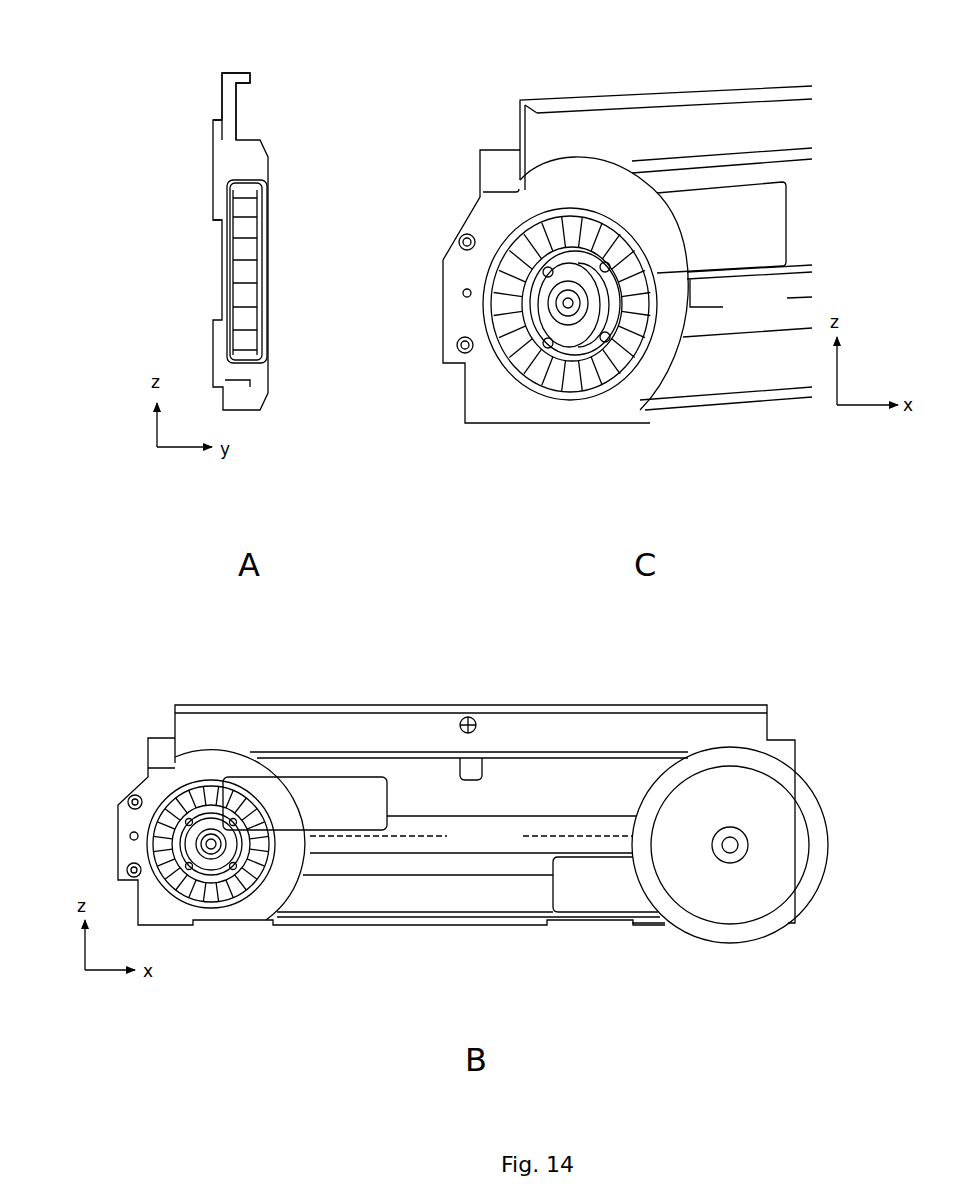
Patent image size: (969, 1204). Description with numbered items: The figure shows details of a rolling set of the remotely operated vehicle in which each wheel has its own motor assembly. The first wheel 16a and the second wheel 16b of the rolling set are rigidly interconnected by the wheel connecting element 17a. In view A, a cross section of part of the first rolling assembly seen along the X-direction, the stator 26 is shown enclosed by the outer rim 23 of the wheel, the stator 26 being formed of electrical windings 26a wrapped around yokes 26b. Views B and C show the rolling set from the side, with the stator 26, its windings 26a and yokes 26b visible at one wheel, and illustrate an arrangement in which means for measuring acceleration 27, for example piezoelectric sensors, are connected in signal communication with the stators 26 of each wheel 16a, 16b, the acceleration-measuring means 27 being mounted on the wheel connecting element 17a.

The wheel connecting element 17a is at (235, 113).
The stator 26 is at (268, 205).
The electrical windings 26a is at (238, 888).
The yokes 26b is at (522, 375).
The means for measuring acceleration 27 is at (742, 236).
The outer rim 23 is at (260, 392).
The first wheel 16a is at (308, 418).
The second wheel 16b is at (780, 810).